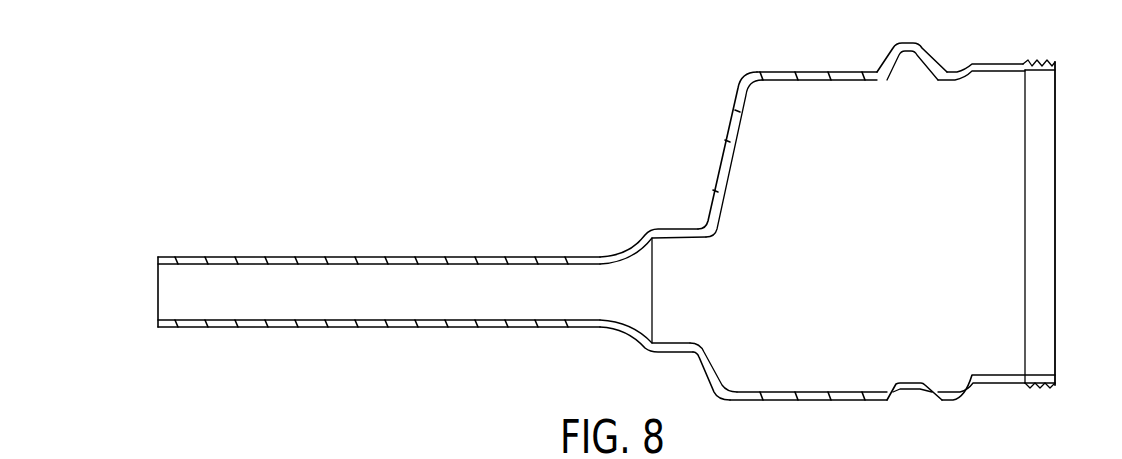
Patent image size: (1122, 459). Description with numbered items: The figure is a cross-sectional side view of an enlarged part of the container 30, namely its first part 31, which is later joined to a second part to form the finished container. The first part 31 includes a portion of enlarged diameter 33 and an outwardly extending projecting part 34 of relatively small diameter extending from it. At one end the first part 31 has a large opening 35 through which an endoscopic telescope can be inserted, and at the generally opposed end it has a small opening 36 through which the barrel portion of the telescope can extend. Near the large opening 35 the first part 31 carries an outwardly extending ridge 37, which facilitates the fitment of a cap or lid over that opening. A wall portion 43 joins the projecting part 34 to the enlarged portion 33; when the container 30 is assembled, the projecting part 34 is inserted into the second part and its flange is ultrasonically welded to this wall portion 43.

The container 30 is at (550, 202).
The first part 31 is at (774, 70).
The portion of enlarged diameter 33 is at (874, 70).
The outwardly extending projecting part 34 is at (382, 256).
The large opening 35 is at (1057, 180).
The small opening 36 is at (156, 278).
The outwardly extending ridge 37 is at (1036, 63).
The wall portion 43 is at (712, 193).